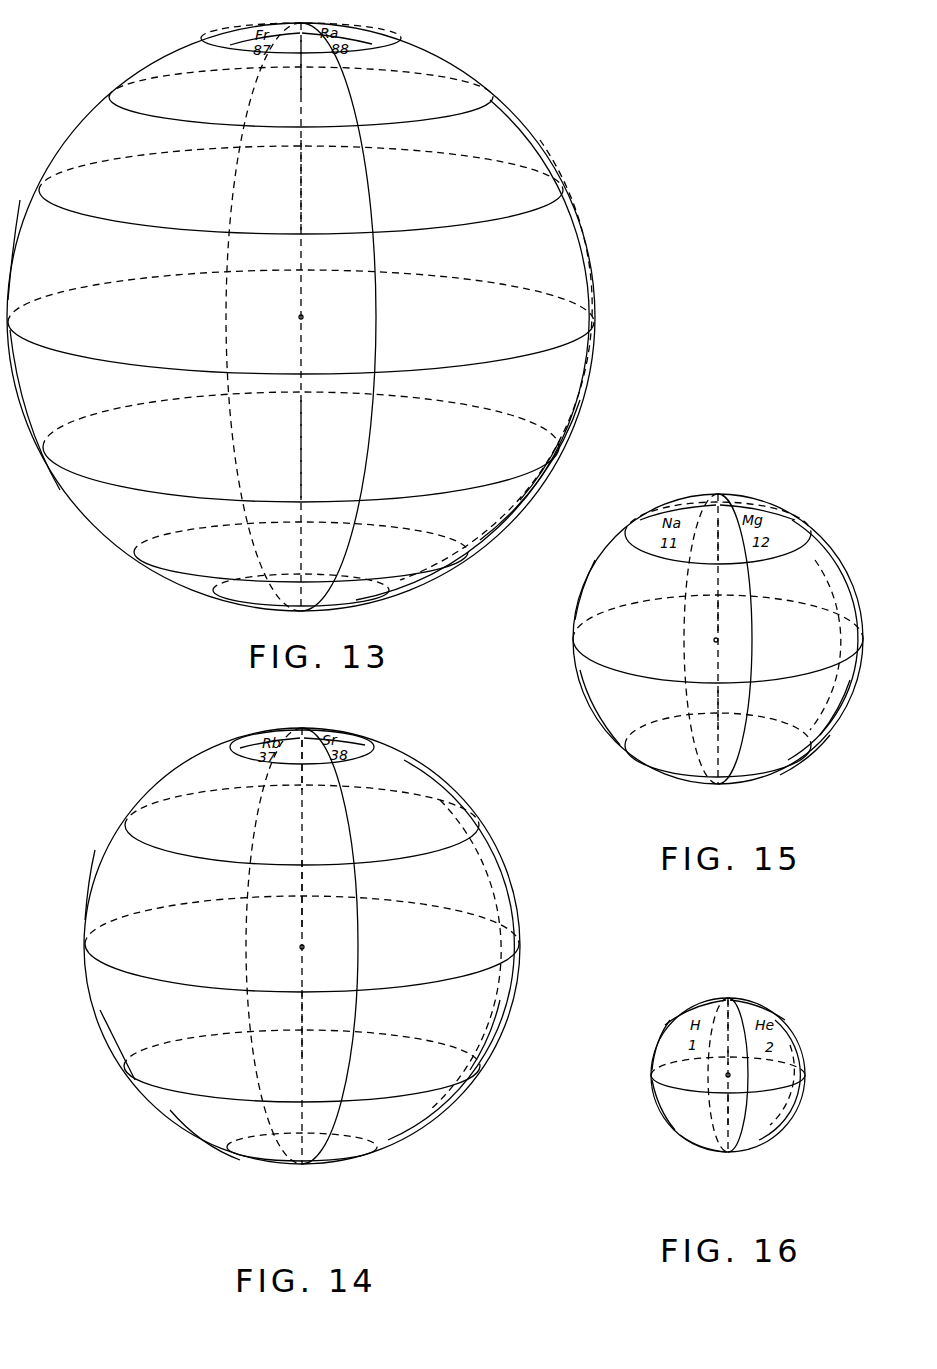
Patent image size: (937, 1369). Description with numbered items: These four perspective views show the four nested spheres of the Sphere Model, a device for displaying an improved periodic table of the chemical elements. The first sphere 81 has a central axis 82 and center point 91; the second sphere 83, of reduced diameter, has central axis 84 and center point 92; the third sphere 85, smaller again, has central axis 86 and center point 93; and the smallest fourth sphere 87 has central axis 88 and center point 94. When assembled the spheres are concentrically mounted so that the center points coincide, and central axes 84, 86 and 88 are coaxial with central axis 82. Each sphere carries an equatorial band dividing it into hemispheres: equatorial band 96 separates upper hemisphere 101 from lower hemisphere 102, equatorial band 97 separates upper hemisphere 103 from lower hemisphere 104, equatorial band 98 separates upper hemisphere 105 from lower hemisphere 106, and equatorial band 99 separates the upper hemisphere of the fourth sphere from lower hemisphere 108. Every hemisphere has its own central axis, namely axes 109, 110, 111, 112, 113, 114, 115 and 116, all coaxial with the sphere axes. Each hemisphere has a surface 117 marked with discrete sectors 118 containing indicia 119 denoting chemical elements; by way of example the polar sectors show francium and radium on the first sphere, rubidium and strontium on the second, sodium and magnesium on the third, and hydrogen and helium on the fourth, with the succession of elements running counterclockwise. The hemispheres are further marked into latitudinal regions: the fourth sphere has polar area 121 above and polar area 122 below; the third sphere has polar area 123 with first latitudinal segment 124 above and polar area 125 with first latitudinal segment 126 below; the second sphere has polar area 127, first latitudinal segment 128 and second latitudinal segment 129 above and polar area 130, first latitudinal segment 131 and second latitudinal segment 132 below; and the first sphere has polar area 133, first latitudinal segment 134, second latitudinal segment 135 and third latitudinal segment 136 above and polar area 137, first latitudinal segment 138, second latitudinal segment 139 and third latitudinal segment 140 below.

In FIG. 13, the first sphere 81 is at (558, 437).
In FIG. 13, the central axis 82 is at (302, 78).
In FIG. 14, the second sphere 83 is at (110, 1040).
In FIG. 14, the central axis 84 is at (305, 760).
In FIG. 15, the third sphere 85 is at (830, 730).
In FIG. 15, the central axis 86 is at (720, 540).
In FIG. 16, the fourth sphere 87 is at (770, 1140).
In FIG. 16, the central axis 88 is at (727, 1030).
In FIG. 13, the center point 91 is at (303, 317).
In FIG. 14, the center point 92 is at (304, 949).
In FIG. 15, the center point 93 is at (718, 641).
In FIG. 16, the center point 94 is at (730, 1077).
In FIG. 13, the equatorial band 96 is at (590, 330).
In FIG. 14, the equatorial band 97 is at (520, 944).
In FIG. 15, the equatorial band 98 is at (862, 648).
In FIG. 16, the equatorial band 99 is at (800, 1075).
In FIG. 13, the upper hemisphere 101 is at (590, 266).
In FIG. 13, the lower hemisphere 102 is at (587, 383).
In FIG. 14, the upper hemisphere 103 is at (490, 852).
In FIG. 14, the lower hemisphere 104 is at (508, 1015).
In FIG. 15, the upper hemisphere 105 is at (858, 630).
In FIG. 15, the lower hemisphere 106 is at (855, 698).
In FIG. 16, the lower hemisphere 108 is at (800, 1103).
In FIG. 13, the central axis 109 is at (303, 175).
In FIG. 13, the central axis 110 is at (303, 437).
In FIG. 14, the central axis 111 is at (303, 905).
In FIG. 14, the central axis 112 is at (303, 1020).
In FIG. 15, the central axis 113 is at (720, 622).
In FIG. 15, the central axis 114 is at (720, 705).
In FIG. 16, the central axis 115 is at (728, 1058).
In FIG. 16, the central axis 116 is at (728, 1110).
In FIG. 13, the surface 117 is at (575, 422).
In FIG. 14, the surface 117 is at (153, 1065).
In FIG. 15, the surface 117 is at (580, 605).
In FIG. 16, the surface 117 is at (700, 1143).
In FIG. 13, the discrete sectors 118 is at (242, 41).
In FIG. 14, the discrete sectors 118 is at (262, 735).
In FIG. 15, the discrete sectors 118 is at (690, 505).
In FIG. 16, the discrete sectors 118 is at (678, 1030).
In FIG. 13, the indicia 119 is at (372, 40).
In FIG. 14, the indicia 119 is at (365, 740).
In FIG. 15, the indicia 119 is at (780, 510).
In FIG. 16, the indicia 119 is at (755, 1008).
In FIG. 16, the polar area 121 is at (665, 1048).
In FIG. 16, the polar area 122 is at (665, 1095).
In FIG. 15, the polar area 123 is at (812, 530).
In FIG. 15, the first latitudinal segment 124 is at (845, 590).
In FIG. 15, the polar area 125 is at (672, 780).
In FIG. 15, the first latitudinal segment 126 is at (597, 692).
In FIG. 14, the polar area 127 is at (245, 742).
In FIG. 14, the first latitudinal segment 128 is at (170, 788).
In FIG. 14, the second latitudinal segment 129 is at (118, 865).
In FIG. 14, the polar area 130 is at (350, 1160).
In FIG. 14, the first latitudinal segment 131 is at (200, 1135).
In FIG. 14, the second latitudinal segment 132 is at (100, 990).
In FIG. 13, the polar area 133 is at (220, 43).
In FIG. 13, the first latitudinal segment 134 is at (155, 73).
In FIG. 13, the second latitudinal segment 135 is at (98, 145).
In FIG. 13, the third latitudinal segment 136 is at (45, 235).
In FIG. 13, the polar area 137 is at (248, 603).
In FIG. 13, the first latitudinal segment 138 is at (182, 575).
In FIG. 13, the second latitudinal segment 139 is at (102, 500).
In FIG. 13, the third latitudinal segment 140 is at (38, 408).